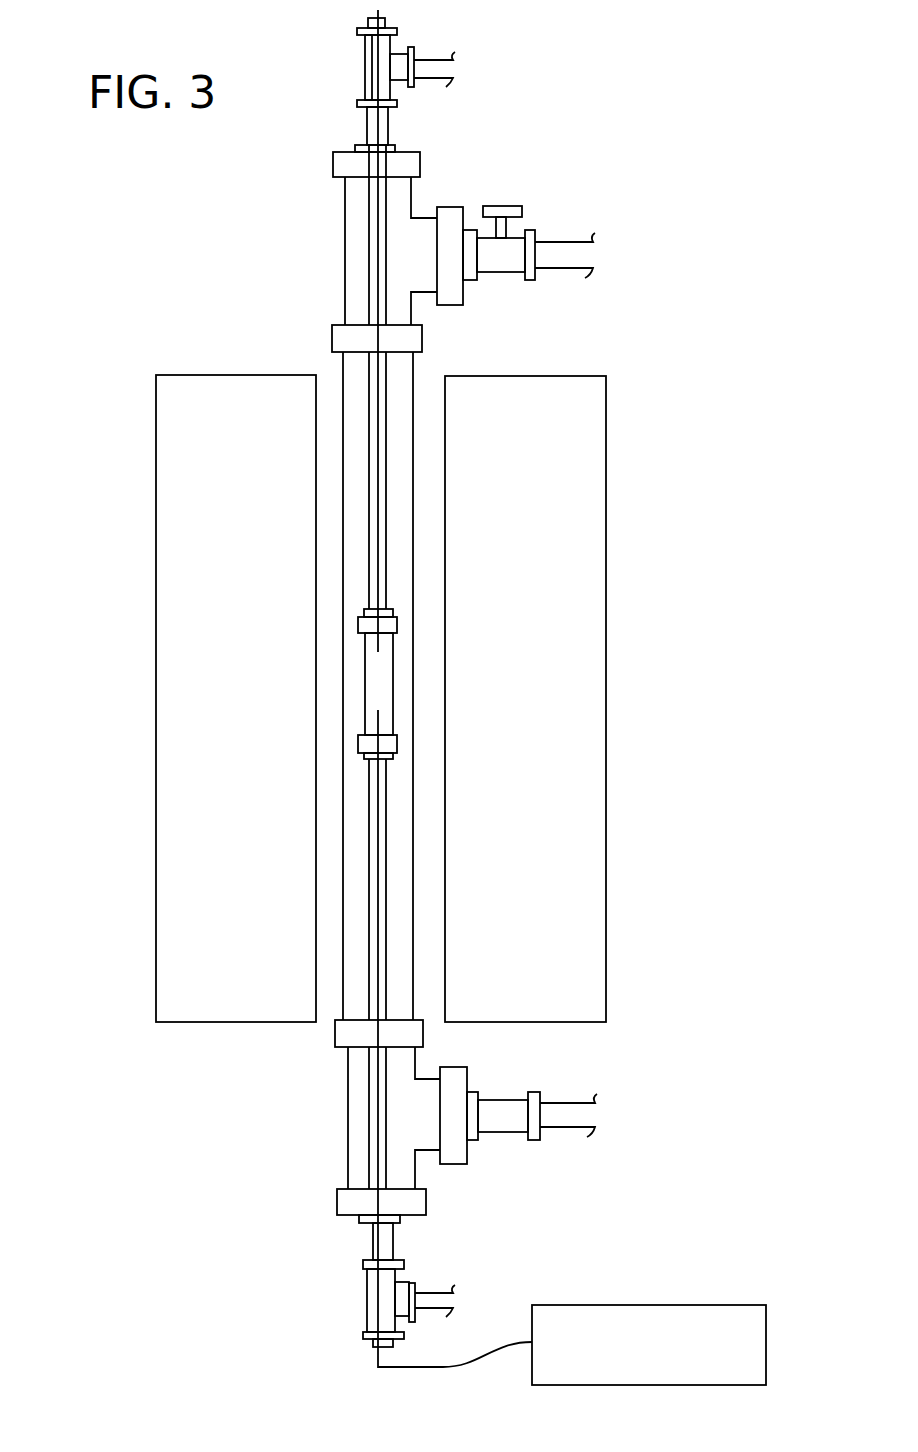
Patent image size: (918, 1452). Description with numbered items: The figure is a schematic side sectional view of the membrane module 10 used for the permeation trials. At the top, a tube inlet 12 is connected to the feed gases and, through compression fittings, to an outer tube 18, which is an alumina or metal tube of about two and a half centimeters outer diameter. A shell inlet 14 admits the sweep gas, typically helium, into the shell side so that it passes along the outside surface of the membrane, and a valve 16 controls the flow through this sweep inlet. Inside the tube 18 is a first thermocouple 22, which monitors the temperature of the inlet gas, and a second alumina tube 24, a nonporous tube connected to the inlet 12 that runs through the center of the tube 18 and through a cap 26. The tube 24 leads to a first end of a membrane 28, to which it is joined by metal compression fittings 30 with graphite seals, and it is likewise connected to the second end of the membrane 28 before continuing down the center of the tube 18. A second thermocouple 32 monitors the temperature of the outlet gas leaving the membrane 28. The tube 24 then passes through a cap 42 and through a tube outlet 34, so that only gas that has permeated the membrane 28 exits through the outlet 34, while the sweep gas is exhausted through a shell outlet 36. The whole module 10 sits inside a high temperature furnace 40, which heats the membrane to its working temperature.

The membrane module 10 is at (143, 662).
The tube inlet 12 is at (437, 60).
The shell inlet 14 is at (565, 242).
The valve 16 is at (502, 205).
The tube 18 is at (342, 245).
The first thermocouple 22 is at (377, 212).
The second alumina tube 24 is at (430, 370).
The cap 26 is at (415, 160).
The membrane 28 is at (393, 690).
The metal compression fittings 30 is at (397, 629).
The second thermocouple 32 is at (378, 1103).
The tube outlet 34 is at (438, 1292).
The shell outlet 36 is at (562, 1102).
The furnace 40 is at (607, 555).
The cap 42 is at (425, 1200).